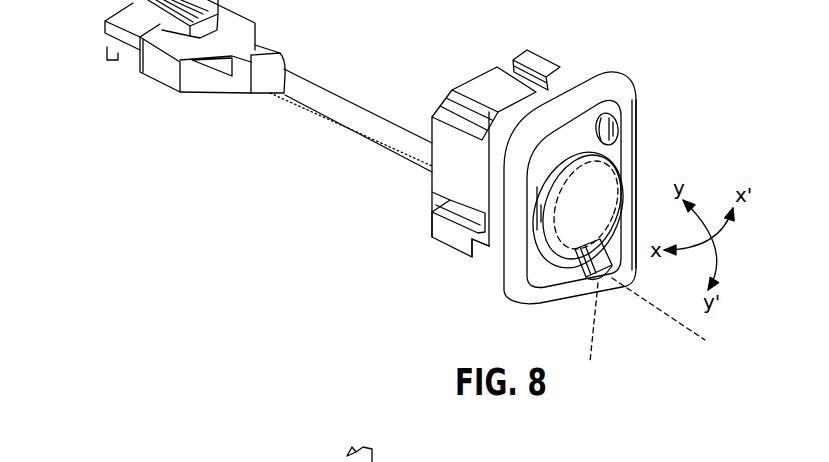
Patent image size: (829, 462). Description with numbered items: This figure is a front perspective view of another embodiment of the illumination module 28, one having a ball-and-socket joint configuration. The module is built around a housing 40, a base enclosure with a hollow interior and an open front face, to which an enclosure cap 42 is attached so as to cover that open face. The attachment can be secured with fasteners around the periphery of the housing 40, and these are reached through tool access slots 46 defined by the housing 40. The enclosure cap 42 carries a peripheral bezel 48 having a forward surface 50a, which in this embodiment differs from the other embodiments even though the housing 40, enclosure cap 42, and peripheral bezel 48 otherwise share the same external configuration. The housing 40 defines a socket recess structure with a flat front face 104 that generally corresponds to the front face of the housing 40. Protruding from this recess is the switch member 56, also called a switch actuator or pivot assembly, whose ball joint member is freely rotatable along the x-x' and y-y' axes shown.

The illumination module 28 is at (482, 72).
The tool access slots 46 is at (532, 72).
The peripheral bezel 48 is at (613, 85).
The forward surface 50a is at (637, 93).
The flat front face 104 is at (577, 155).
The switch member 56 is at (598, 178).
The housing 40 is at (452, 235).
The enclosure cap 42 is at (488, 255).